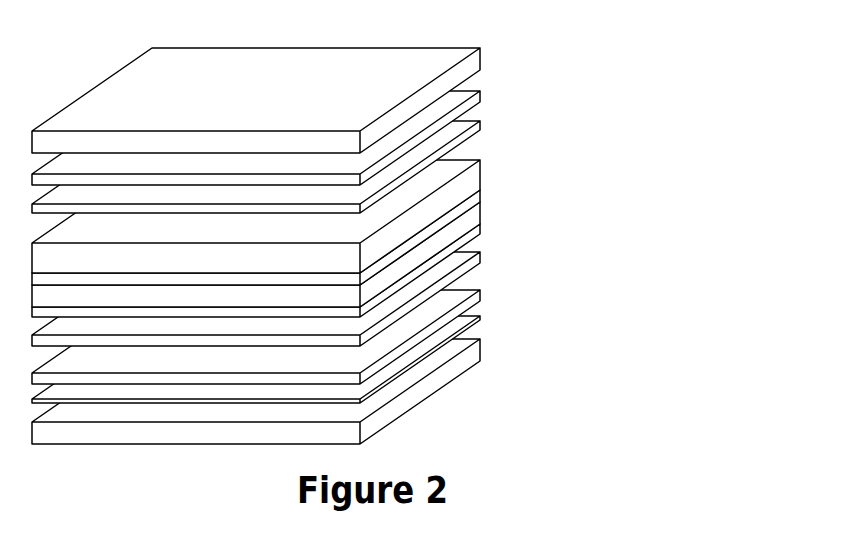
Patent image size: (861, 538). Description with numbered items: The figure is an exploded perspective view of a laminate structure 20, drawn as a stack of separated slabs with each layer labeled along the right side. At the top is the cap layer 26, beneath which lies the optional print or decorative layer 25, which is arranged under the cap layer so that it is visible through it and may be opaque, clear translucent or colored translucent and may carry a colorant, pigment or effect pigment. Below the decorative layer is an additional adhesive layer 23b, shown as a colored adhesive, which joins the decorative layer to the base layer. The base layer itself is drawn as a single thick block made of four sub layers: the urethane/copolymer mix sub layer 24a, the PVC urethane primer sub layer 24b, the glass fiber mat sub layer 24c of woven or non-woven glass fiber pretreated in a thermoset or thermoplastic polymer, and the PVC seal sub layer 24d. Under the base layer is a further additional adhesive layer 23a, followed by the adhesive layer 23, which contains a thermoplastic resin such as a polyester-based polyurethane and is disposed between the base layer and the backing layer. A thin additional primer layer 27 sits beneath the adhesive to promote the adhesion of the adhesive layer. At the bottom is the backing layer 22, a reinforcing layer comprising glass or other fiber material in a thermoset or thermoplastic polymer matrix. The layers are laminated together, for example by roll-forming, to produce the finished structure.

The laminate structure 20 is at (68, 94).
The backing layer 22 is at (478, 352).
The adhesive layer 23 is at (478, 298).
The additional adhesive layer 23a is at (478, 258).
The additional adhesive layer 23b is at (478, 128).
The urethane/copolymer mix sub layer 24a is at (478, 168).
The PVC urethane primer sub layer 24b is at (478, 197).
The glass fiber mat sub layer 24c is at (478, 213).
The PVC seal sub layer 24d is at (478, 229).
The print or decorative layer 25 is at (478, 100).
The cap layer 26 is at (478, 61).
The additional primer layer 27 is at (478, 318).